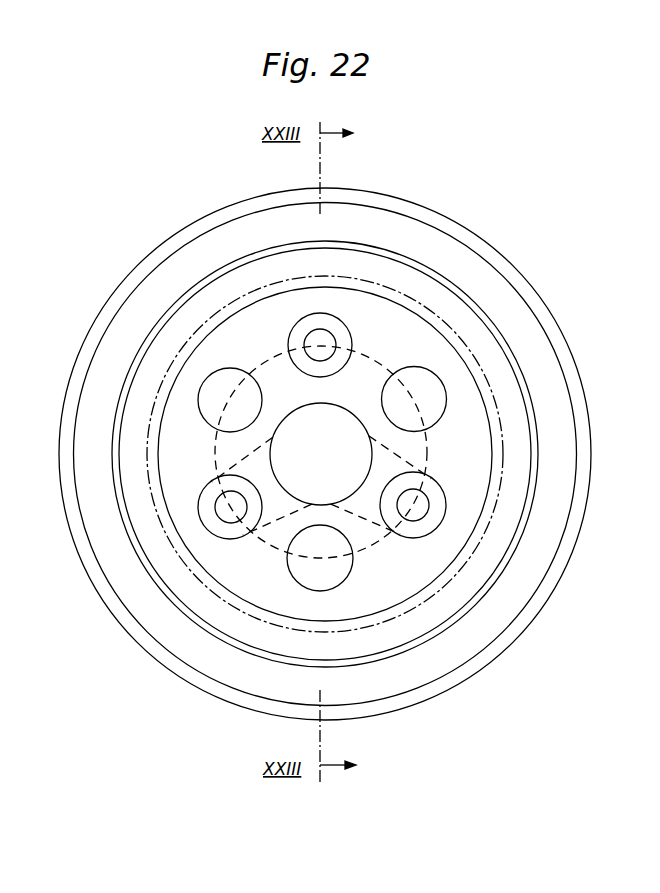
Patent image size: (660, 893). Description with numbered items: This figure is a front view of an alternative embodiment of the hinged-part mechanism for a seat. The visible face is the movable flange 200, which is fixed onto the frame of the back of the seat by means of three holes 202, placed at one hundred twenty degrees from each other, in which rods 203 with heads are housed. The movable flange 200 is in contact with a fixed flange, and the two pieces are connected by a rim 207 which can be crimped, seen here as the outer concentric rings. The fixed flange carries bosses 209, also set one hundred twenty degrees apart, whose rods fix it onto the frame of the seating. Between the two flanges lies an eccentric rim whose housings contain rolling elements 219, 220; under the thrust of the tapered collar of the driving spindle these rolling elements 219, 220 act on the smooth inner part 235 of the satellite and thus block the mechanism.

The movable flange 200 is at (510, 286).
The holes 202 is at (337, 336).
The rods 203 is at (352, 344).
The rim 207 is at (480, 243).
The bosses 209 is at (230, 368).
The rolling element 219 is at (395, 470).
The rolling element 220 is at (240, 456).
The smooth inner part of the satellite 235 is at (395, 496).